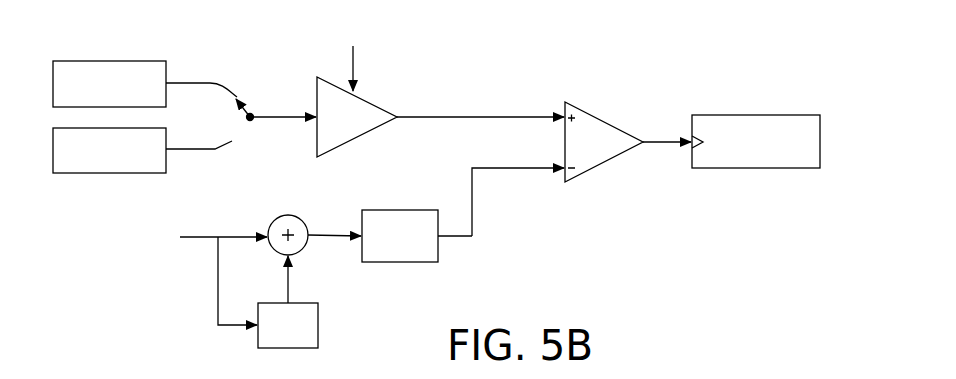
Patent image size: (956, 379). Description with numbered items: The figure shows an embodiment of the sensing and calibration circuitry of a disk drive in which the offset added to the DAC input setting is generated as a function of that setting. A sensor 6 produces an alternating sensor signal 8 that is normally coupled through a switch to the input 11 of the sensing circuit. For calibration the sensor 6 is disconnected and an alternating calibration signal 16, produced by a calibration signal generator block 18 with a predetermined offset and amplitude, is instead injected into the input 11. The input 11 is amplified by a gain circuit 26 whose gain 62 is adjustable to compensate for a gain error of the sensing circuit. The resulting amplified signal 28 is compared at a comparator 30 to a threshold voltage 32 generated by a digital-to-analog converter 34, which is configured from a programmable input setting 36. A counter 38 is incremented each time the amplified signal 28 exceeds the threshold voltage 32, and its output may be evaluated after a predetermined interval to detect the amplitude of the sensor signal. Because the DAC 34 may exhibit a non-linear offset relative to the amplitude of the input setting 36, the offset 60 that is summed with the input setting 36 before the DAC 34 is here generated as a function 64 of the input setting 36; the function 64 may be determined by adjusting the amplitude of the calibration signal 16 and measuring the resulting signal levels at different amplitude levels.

The sensor 6 is at (110, 60).
The alternating sensor signal 8 is at (190, 82).
The input of the sensing circuit 11 is at (279, 114).
The alternating calibration signal 16 is at (193, 150).
The calibration signal generator block 18 is at (110, 174).
The gain circuit 26 is at (355, 142).
The amplified signal 28 is at (437, 118).
The comparator 30 is at (607, 167).
The threshold voltage 32 is at (540, 169).
The digital-to-analog converter (DAC) 34 is at (400, 262).
The input setting 36 is at (242, 233).
The counter 38 is at (755, 168).
The offset 60 is at (286, 288).
The gain 62 is at (356, 60).
The function 64 is at (288, 348).